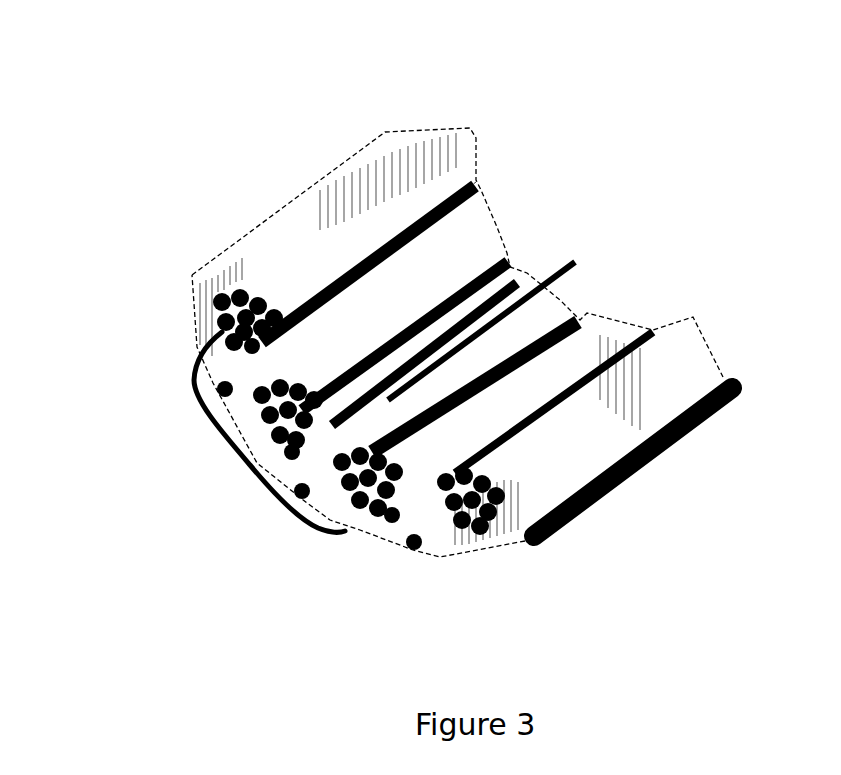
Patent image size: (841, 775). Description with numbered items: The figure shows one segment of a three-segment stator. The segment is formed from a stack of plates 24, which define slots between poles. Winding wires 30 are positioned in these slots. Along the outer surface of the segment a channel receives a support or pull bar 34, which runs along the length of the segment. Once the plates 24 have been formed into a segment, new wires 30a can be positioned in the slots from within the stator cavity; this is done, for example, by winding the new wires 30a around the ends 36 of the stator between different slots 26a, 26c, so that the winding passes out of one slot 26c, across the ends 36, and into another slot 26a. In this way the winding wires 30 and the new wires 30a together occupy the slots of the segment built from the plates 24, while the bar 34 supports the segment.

The plates 24 is at (506, 217).
The winding wires 30 is at (489, 169).
The new wires 30a is at (585, 255).
The slot 26a is at (372, 528).
The slot 26c is at (201, 320).
The support or pull bar 34 is at (670, 460).
The ends of the stator 36 is at (372, 530).